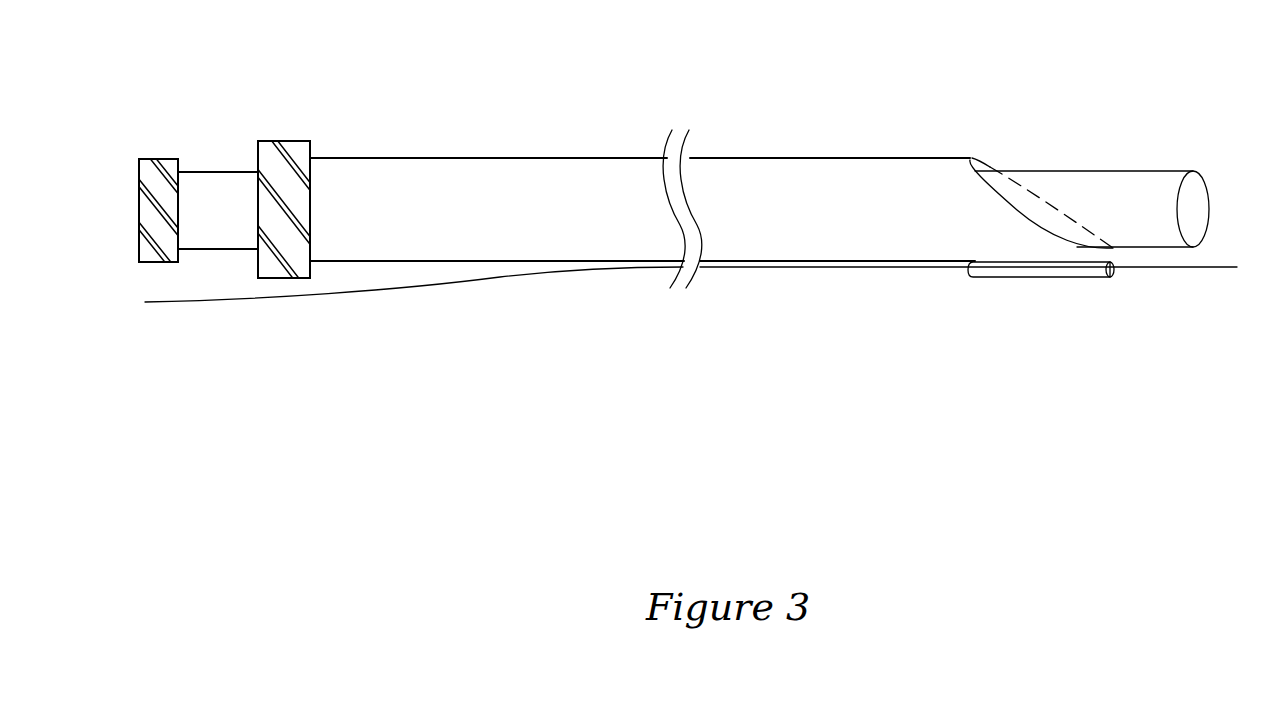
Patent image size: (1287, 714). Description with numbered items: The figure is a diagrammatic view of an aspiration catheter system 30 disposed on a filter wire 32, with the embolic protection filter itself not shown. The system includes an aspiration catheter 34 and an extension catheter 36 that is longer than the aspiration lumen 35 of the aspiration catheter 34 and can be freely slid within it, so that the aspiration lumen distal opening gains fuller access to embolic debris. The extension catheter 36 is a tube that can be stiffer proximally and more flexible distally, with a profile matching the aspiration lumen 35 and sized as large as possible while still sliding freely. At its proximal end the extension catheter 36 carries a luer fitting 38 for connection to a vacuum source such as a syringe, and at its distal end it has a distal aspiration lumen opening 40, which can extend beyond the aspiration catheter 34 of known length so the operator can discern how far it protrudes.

The aspiration catheter system 30 is at (686, 96).
The filter wire 32 is at (360, 294).
The aspiration catheter 34 is at (458, 166).
The aspiration catheter aspiration lumen 35 is at (979, 165).
The extension catheter 36 is at (1107, 178).
The luer fitting 38 is at (160, 158).
The distal aspiration lumen opening 40 is at (1196, 186).